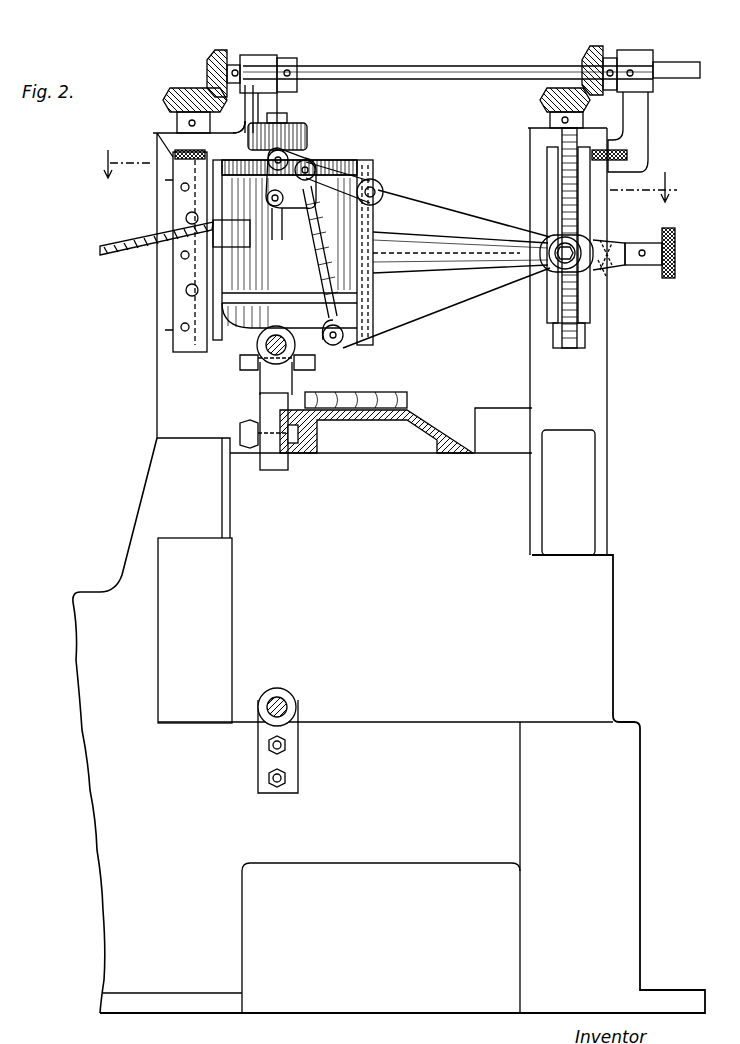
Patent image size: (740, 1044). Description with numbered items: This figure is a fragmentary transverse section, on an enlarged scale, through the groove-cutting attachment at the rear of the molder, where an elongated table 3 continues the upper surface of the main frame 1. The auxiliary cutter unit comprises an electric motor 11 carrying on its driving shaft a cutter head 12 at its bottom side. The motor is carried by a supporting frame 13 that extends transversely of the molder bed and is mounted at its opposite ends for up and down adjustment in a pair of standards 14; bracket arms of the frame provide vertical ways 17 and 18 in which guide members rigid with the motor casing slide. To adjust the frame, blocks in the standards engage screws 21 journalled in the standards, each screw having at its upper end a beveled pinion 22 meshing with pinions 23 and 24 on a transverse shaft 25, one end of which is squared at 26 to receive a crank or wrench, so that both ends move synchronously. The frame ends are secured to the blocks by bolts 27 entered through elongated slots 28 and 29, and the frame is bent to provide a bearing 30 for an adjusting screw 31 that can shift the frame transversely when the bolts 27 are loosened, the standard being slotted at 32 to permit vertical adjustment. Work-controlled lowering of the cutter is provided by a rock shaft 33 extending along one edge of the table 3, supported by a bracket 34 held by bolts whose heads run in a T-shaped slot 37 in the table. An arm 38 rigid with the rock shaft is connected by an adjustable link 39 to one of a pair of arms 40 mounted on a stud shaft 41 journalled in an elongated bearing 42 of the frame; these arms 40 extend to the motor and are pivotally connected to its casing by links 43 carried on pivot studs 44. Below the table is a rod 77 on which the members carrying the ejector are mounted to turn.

The main frame 1 is at (562, 622).
The elongated table 3 is at (410, 412).
The electric motor 11 is at (232, 272).
The cutter head 12 is at (307, 368).
The supporting frame 13 is at (398, 203).
The standards 14 is at (167, 387).
The vertical way 17 is at (171, 187).
The vertical way 18 is at (366, 296).
The screws 21 is at (162, 133).
The beveled pinions 22 is at (172, 92).
The pinion 23 is at (219, 55).
The pinion 24 is at (603, 50).
The transverse shaft 25 is at (456, 70).
The squared end 26 is at (688, 64).
The bolts 27 is at (550, 270).
The elongated slot 28 is at (600, 240).
The elongated slot 29 is at (185, 213).
The bearing 30 is at (620, 270).
The adjusting screw 31 is at (628, 237).
The slot 32 is at (597, 280).
The rock shaft 33 is at (270, 356).
The bracket 34 is at (285, 468).
The T-shaped slot 37 is at (318, 447).
The arm 38 is at (335, 347).
The adjustable link 39 is at (334, 246).
The arms 40 is at (285, 212).
The stud shaft 41 is at (375, 188).
The elongated bearing 42 is at (388, 182).
The links 43 is at (306, 148).
The pivot studs 44 is at (307, 205).
The rod 77 is at (290, 688).